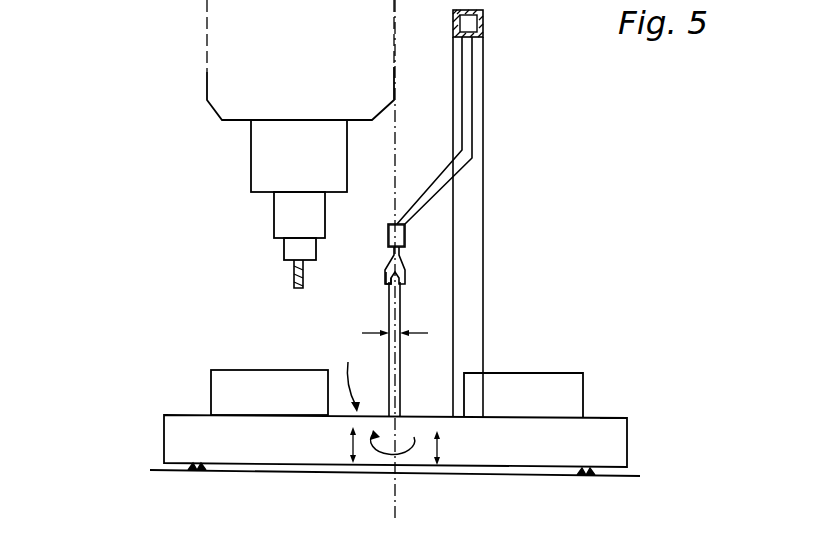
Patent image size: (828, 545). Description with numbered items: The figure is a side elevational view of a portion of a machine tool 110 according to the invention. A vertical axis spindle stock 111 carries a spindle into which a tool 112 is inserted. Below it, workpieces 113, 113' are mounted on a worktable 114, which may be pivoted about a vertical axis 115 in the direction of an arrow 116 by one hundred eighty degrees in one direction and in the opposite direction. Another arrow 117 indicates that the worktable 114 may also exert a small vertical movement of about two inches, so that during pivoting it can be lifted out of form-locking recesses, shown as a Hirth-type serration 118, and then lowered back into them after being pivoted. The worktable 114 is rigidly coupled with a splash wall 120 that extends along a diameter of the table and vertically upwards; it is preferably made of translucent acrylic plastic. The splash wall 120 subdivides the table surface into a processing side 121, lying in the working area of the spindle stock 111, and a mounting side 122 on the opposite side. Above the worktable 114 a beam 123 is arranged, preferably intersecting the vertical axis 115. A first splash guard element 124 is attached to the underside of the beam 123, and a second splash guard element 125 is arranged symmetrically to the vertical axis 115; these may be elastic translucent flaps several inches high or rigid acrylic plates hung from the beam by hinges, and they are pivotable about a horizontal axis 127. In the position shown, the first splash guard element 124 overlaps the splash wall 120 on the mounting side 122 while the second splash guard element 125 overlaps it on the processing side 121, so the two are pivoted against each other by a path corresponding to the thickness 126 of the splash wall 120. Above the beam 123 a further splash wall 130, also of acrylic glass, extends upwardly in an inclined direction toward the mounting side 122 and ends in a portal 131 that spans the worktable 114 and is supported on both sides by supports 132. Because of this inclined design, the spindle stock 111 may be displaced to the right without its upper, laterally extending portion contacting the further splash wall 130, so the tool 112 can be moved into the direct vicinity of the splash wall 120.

The machine tool 110 is at (125, 64).
The spindle stock 111 is at (220, 69).
The tool 112 is at (293, 274).
The workpiece 113 is at (269, 374).
The workpiece 113' is at (523, 377).
The worktable 114 is at (183, 428).
The vertical axis 115 is at (395, 491).
The arrow 116 is at (414, 437).
The arrow 117 is at (437, 438).
The Hirth-type serration 118 is at (197, 470).
The splash wall 120 is at (389, 304).
The processing side 121 is at (348, 399).
The mounting side 122 is at (609, 415).
The beam 123 is at (388, 235).
The first splash guard element 124 is at (406, 282).
The second splash guard element 125 is at (387, 276).
The thickness 126 is at (401, 330).
The horizontal axis 127 is at (405, 235).
The further splash wall 130 is at (469, 138).
The portal 131 is at (482, 19).
The supports 132 is at (475, 268).